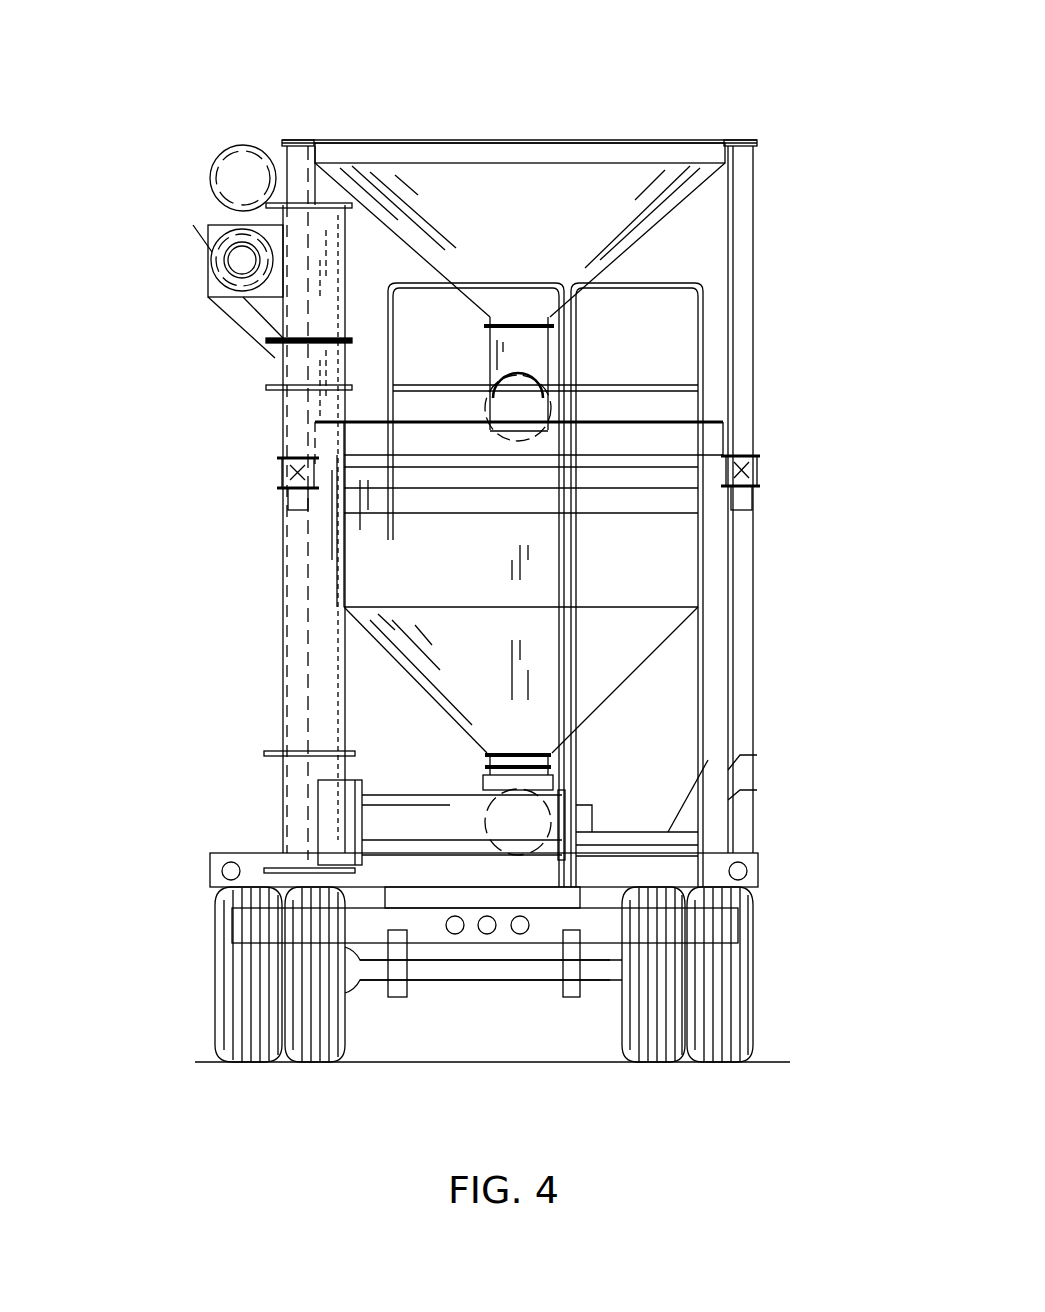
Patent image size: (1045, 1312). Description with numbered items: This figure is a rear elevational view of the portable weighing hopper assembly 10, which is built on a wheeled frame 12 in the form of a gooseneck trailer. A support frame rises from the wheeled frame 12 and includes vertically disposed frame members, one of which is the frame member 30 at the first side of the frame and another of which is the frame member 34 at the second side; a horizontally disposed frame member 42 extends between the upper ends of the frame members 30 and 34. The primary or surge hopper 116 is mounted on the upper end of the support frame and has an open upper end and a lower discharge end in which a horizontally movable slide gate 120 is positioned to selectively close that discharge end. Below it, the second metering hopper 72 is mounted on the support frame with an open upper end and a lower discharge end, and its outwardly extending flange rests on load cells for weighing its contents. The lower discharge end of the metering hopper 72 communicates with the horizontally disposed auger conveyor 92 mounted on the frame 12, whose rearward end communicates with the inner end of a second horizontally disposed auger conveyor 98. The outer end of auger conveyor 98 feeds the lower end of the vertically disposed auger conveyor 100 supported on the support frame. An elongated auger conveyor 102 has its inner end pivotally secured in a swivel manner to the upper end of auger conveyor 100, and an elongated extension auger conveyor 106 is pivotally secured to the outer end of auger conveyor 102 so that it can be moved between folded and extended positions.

The portable weighing hopper assembly 10 is at (574, 100).
The wheeled frame 12 is at (762, 985).
The vertically disposed frame member 30 is at (300, 130).
The vertically disposed frame member 34 is at (752, 160).
The horizontally disposed frame member 42 is at (502, 145).
The second metering hopper 72 is at (357, 625).
The horizontally disposed auger conveyor 92 is at (540, 815).
The horizontally disposed auger conveyor 98 is at (430, 795).
The vertically disposed auger conveyor 100 is at (335, 240).
The elongated auger conveyor 102 is at (210, 297).
The elongated extension auger conveyor 106 is at (212, 145).
The primary or surge hopper 116 is at (666, 163).
The slide gate 120 is at (552, 327).